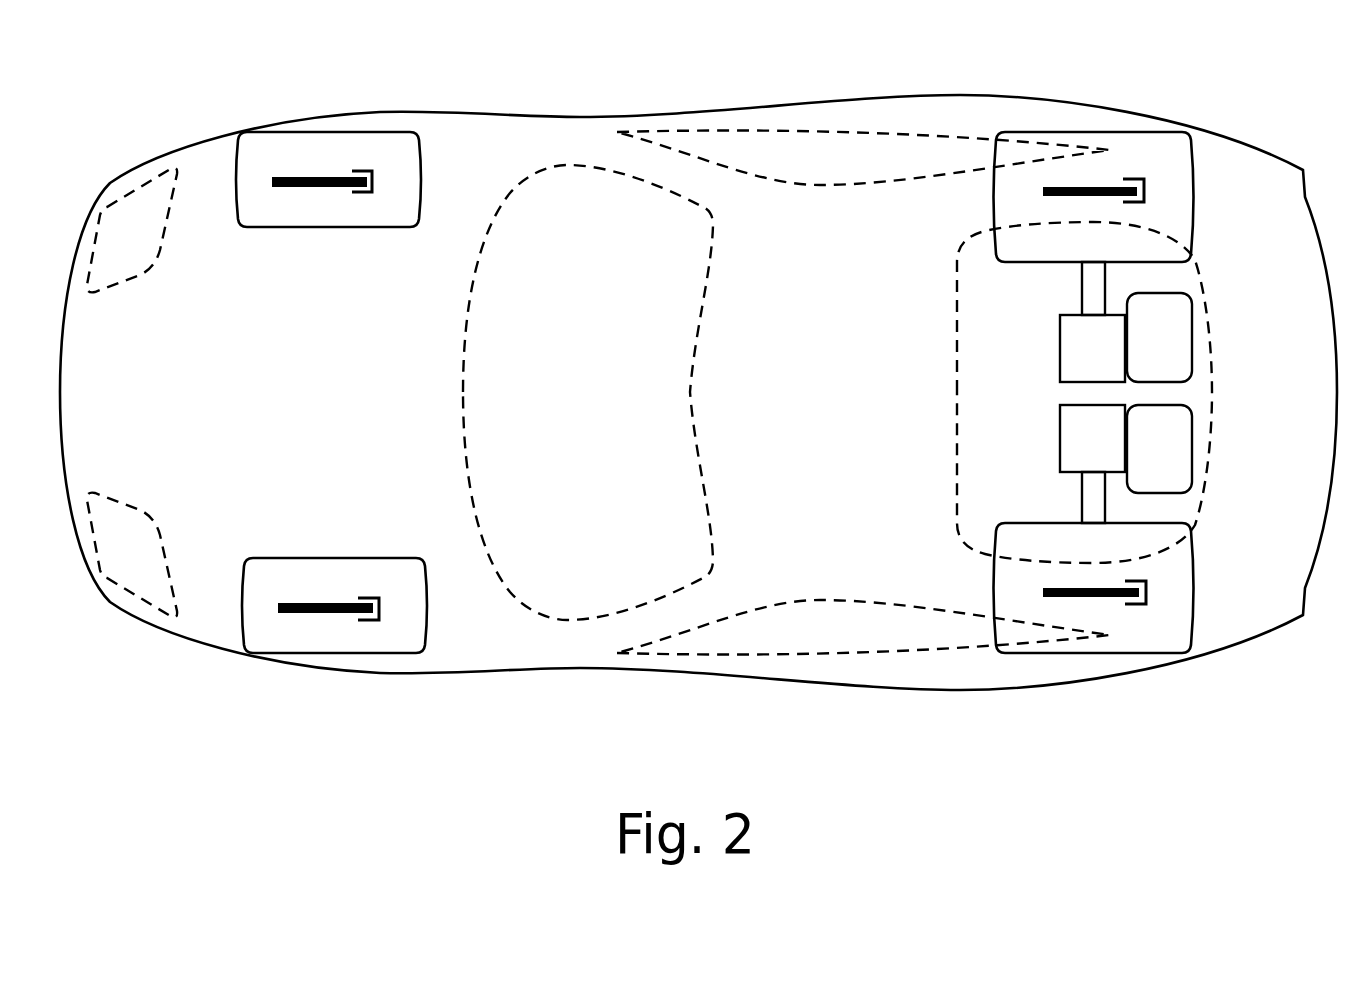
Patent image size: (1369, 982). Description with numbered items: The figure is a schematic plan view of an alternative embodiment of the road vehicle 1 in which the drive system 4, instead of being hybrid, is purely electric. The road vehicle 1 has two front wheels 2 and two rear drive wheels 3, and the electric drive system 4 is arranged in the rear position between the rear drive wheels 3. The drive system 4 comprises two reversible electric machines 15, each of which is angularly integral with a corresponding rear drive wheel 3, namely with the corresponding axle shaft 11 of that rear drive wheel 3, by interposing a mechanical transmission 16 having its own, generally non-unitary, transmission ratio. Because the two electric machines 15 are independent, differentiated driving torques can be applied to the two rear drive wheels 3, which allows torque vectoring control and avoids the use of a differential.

The road vehicle 1 is at (1240, 780).
The front wheels 2 is at (313, 160).
The rear drive wheels 3 is at (1177, 148).
The drive system 4 is at (893, 76).
The axle shaft 11 is at (1090, 287).
The reversible electric machine 15 is at (1159, 393).
The mechanical transmission 16 is at (1092, 393).